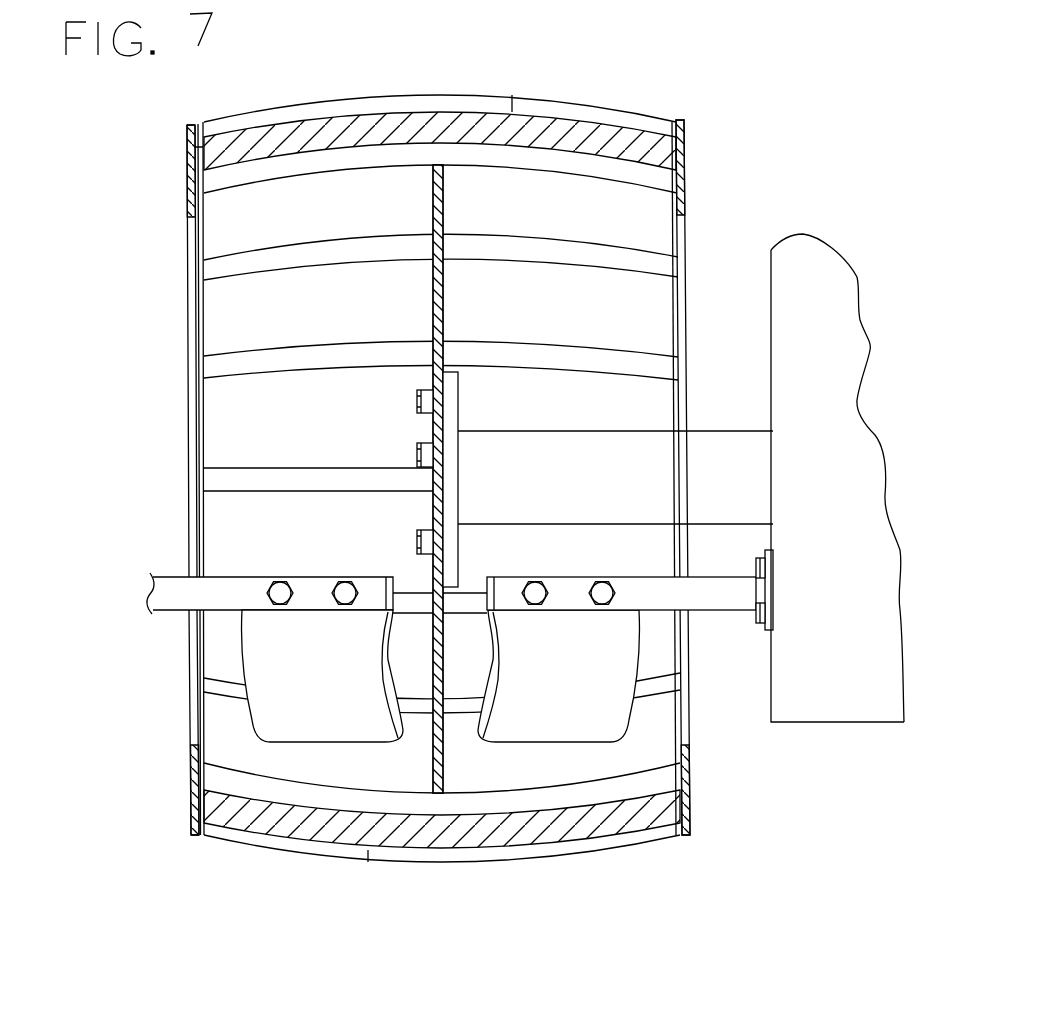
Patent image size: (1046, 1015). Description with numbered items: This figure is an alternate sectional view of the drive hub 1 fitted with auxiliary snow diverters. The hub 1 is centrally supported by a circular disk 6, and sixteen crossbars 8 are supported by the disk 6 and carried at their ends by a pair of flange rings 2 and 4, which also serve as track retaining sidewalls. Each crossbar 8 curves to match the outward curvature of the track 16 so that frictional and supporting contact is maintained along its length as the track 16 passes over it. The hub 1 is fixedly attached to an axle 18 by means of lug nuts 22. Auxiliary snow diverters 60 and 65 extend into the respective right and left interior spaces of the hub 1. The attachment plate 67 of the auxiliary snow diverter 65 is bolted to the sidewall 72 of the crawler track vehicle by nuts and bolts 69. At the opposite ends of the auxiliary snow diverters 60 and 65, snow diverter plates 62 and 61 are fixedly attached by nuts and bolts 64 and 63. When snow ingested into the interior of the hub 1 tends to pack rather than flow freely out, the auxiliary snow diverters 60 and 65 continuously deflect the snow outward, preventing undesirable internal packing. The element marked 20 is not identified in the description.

The drive hub 1 is at (142, 197).
The flange ring 2 is at (205, 790).
The flange ring 4 is at (690, 175).
The circular disk 6 is at (437, 300).
The crossbars 8 is at (563, 252).
The track 16 is at (548, 95).
The axle 18 is at (565, 472).
The mounting plate 20 is at (447, 398).
The lug nuts 22 is at (417, 545).
The auxiliary snow diverter 60 is at (200, 598).
The snow diverter plate 61 is at (555, 685).
The snow diverter plate 62 is at (312, 662).
The nuts and bolts 63 is at (602, 595).
The nuts and bolts 64 is at (278, 593).
The auxiliary snow diverter 65 is at (725, 593).
The attachment plate 67 is at (771, 568).
The nuts and bolts 69 is at (765, 616).
The sidewall 72 is at (830, 433).